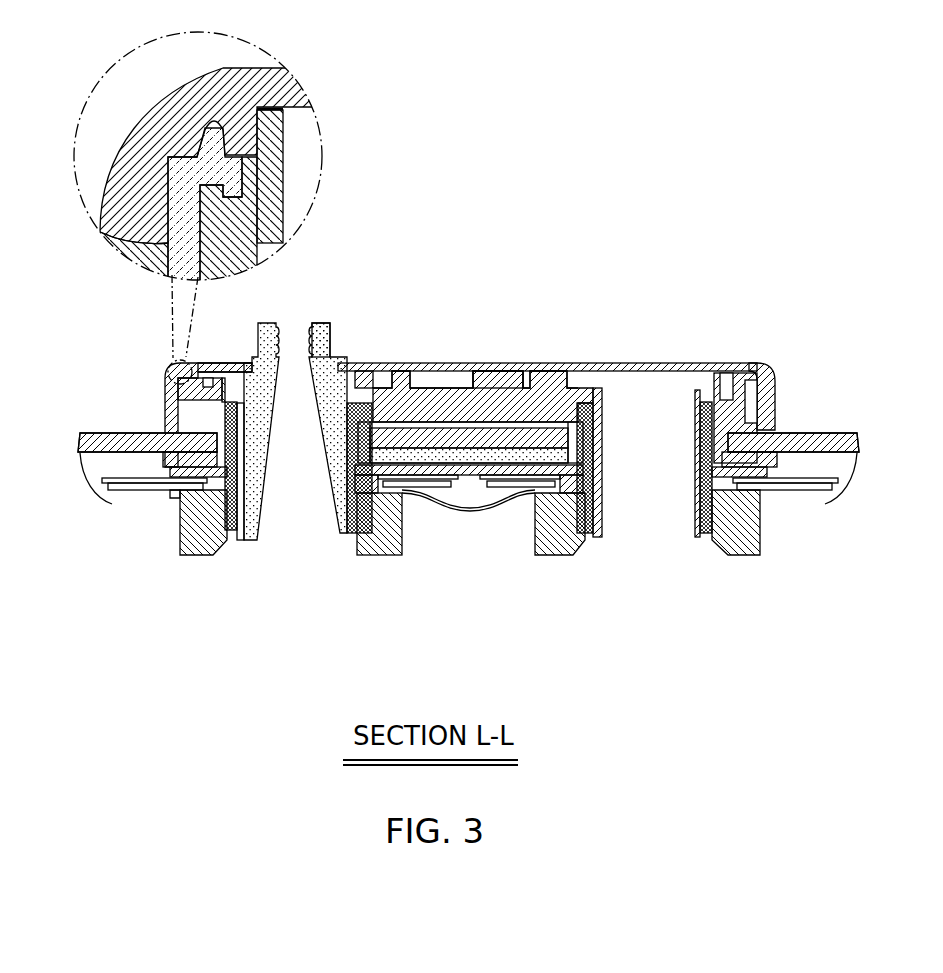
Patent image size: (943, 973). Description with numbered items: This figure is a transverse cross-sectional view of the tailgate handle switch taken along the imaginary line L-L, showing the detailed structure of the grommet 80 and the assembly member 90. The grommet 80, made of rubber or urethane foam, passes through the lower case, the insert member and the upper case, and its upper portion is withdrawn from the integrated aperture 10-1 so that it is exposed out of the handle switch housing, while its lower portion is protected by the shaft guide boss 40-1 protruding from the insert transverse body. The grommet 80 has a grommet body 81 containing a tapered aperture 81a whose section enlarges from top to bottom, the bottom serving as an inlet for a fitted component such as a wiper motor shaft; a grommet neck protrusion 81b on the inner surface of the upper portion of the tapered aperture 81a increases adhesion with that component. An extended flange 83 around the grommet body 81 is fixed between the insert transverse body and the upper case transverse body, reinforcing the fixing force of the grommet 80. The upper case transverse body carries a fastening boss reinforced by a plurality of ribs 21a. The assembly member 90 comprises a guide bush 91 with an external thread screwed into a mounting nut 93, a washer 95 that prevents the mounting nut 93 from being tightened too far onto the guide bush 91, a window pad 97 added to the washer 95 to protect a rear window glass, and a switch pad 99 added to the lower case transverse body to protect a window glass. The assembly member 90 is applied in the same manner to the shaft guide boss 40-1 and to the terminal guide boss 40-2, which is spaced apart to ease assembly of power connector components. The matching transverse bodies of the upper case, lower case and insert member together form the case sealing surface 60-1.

The ribs 21a is at (475, 382).
The case sealing surface 60-1 is at (163, 366).
The shaft guide boss 40-1 is at (167, 418).
The terminal guide boss 40-2 is at (603, 452).
The integrated aperture 10-1 is at (235, 364).
The grommet 80 is at (347, 371).
The grommet body 81 is at (335, 330).
The tapered aperture 81a is at (343, 311).
The grommet neck protrusion 81b is at (273, 341).
The extended flange 83 is at (368, 366).
The assembly member 90 is at (352, 640).
The guide bush 91 is at (242, 532).
The mounting nut 93 is at (225, 534).
The washer 95 is at (176, 492).
The window pad 97 is at (192, 454).
The switch pad 99 is at (402, 445).